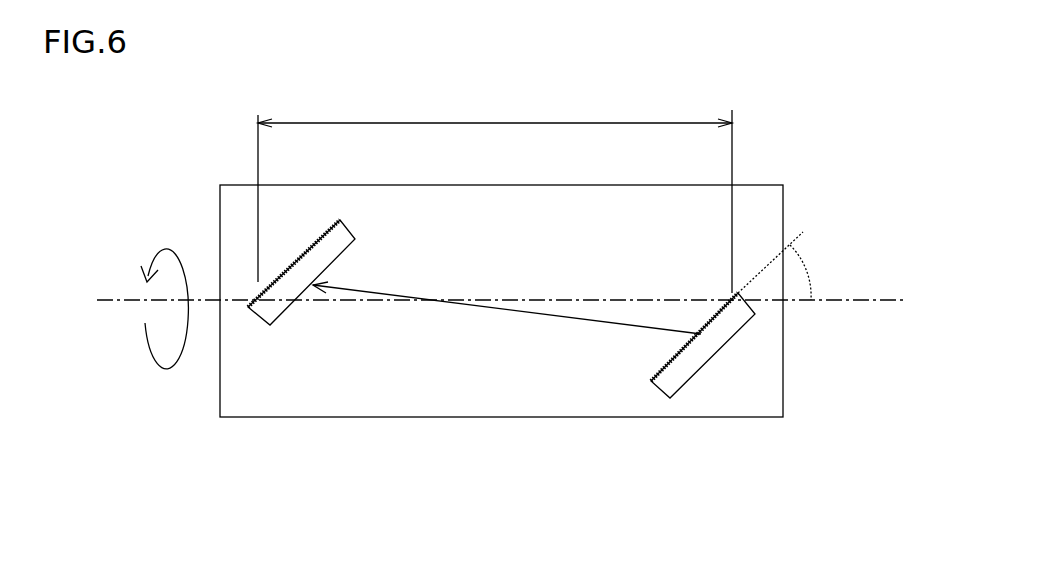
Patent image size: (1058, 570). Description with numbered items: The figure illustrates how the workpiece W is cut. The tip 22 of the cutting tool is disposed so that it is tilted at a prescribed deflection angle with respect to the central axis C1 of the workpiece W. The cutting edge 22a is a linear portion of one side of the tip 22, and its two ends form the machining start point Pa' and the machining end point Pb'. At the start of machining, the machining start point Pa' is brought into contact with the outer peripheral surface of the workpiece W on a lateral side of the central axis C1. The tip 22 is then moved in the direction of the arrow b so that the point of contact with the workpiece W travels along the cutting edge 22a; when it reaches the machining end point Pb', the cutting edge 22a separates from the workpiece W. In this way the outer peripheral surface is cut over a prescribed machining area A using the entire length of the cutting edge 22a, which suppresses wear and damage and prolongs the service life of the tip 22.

The tip 22 is at (272, 325).
The cutting edge 22a is at (297, 250).
The workpiece W is at (763, 185).
The machining area A is at (495, 187).
The arrow b is at (520, 313).
The central axis C1 is at (853, 300).
The machining start point Pa' is at (505, 212).
The machining end point Pb' is at (413, 293).